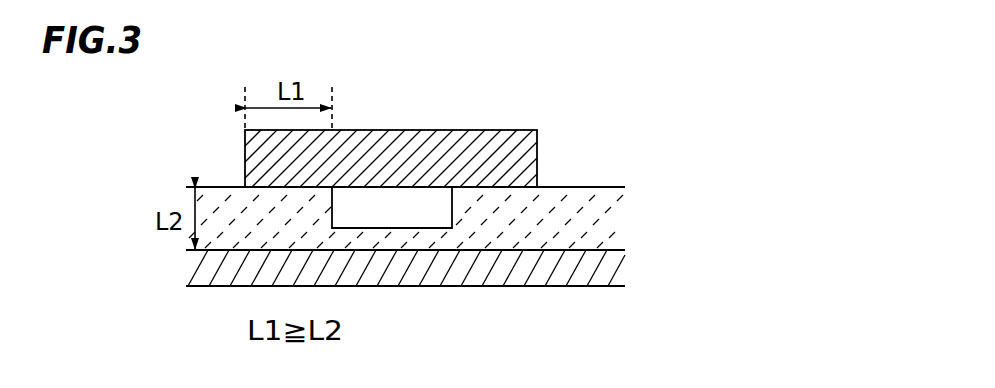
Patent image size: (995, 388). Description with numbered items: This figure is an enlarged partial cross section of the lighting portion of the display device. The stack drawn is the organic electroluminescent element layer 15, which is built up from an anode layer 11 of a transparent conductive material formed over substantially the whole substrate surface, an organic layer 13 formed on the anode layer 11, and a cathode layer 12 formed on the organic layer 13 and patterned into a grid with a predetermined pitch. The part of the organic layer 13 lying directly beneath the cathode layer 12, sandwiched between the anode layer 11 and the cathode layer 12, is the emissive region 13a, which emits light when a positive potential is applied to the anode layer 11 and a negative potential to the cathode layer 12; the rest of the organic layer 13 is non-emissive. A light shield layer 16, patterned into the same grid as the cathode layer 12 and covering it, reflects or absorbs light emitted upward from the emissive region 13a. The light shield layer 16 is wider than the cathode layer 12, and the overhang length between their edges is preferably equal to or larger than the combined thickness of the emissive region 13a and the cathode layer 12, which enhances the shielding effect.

The anode layer 11 is at (612, 268).
The cathode layer 12 is at (452, 200).
The organic layer 13 is at (612, 235).
The emissive region 13a is at (407, 238).
The organic electroluminescent element layer 15 is at (683, 195).
The light shield layer 16 is at (537, 157).